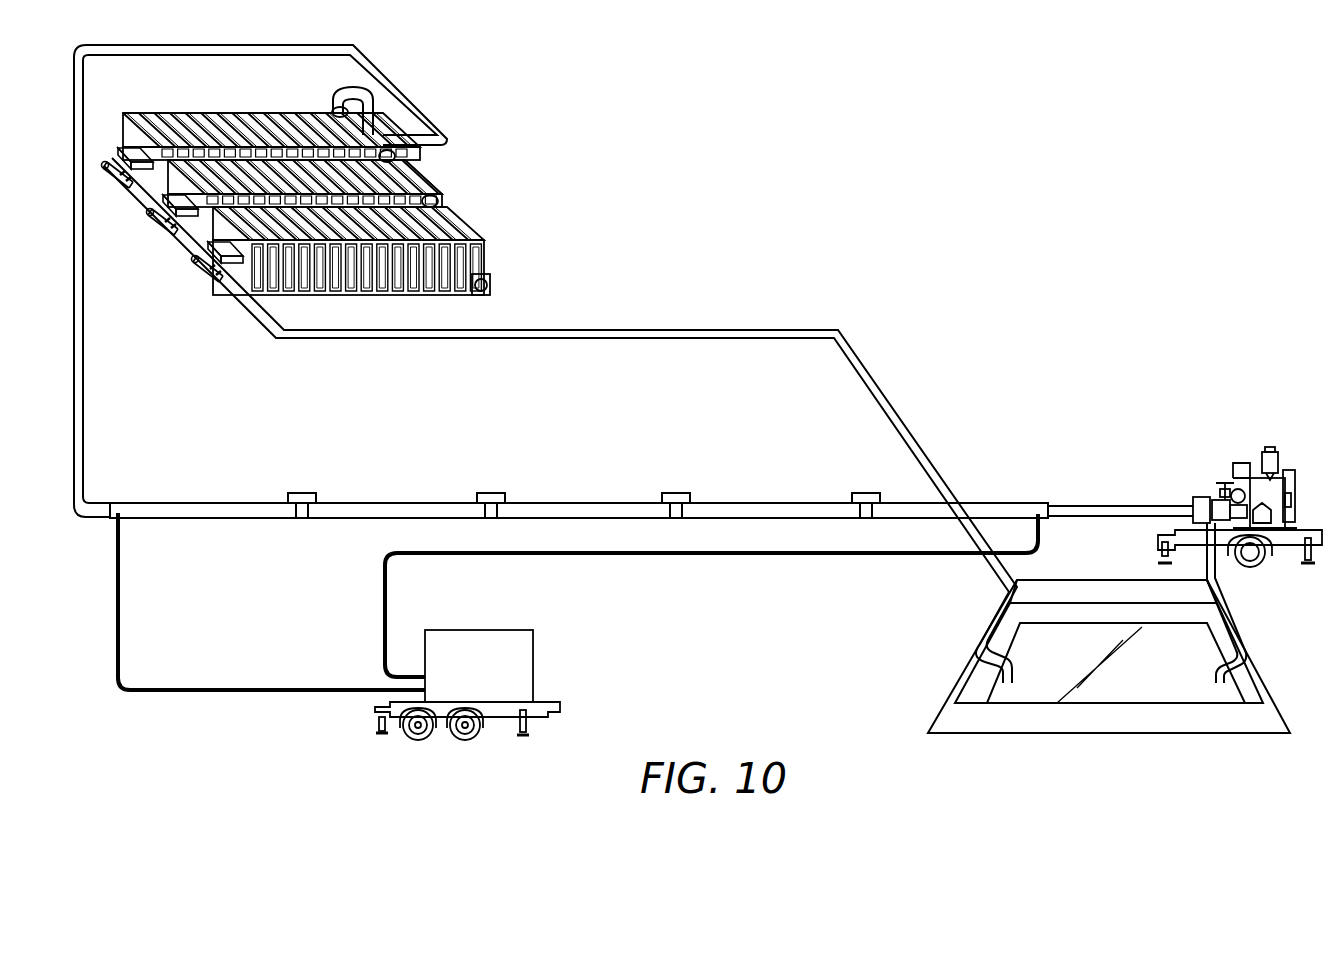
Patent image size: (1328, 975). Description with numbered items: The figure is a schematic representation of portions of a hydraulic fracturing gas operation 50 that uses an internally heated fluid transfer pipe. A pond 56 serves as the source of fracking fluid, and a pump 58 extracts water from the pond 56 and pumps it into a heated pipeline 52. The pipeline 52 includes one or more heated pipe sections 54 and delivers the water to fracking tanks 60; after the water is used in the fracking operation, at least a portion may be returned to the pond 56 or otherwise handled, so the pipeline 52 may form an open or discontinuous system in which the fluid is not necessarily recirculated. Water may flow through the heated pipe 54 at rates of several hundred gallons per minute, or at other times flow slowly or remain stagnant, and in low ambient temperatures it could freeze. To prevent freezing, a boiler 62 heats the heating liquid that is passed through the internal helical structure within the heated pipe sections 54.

The hydraulic fracturing gas operation 50 is at (672, 234).
The heated pipeline 52 is at (398, 485).
The heated pipe section 54 is at (713, 503).
The pond 56 is at (1073, 642).
The pump 58 is at (1242, 468).
The fracking tanks 60 is at (421, 184).
The boiler 62 is at (485, 630).